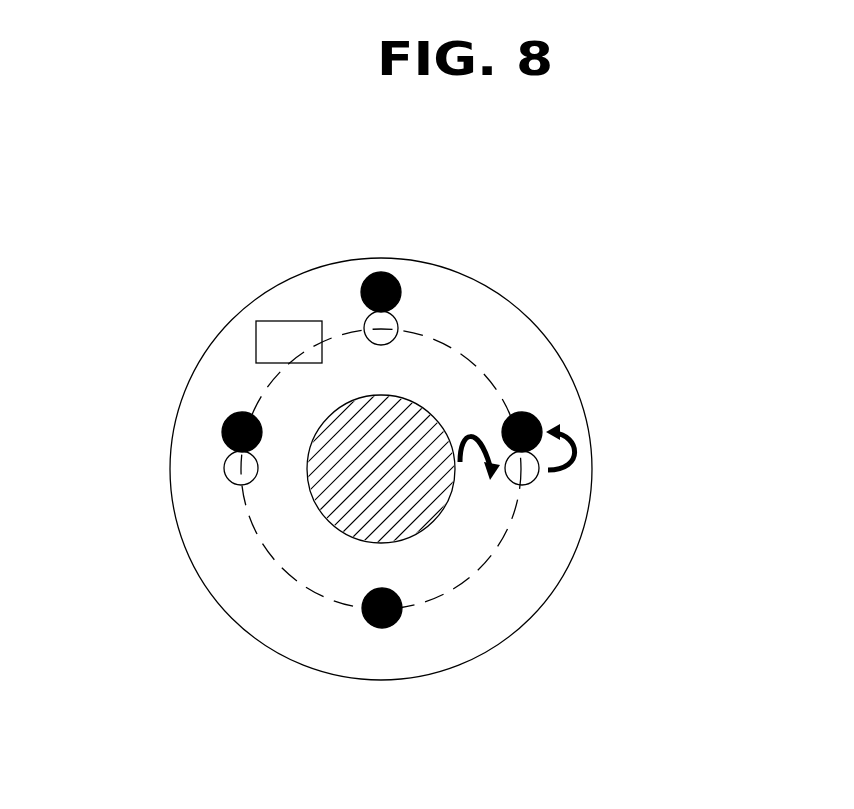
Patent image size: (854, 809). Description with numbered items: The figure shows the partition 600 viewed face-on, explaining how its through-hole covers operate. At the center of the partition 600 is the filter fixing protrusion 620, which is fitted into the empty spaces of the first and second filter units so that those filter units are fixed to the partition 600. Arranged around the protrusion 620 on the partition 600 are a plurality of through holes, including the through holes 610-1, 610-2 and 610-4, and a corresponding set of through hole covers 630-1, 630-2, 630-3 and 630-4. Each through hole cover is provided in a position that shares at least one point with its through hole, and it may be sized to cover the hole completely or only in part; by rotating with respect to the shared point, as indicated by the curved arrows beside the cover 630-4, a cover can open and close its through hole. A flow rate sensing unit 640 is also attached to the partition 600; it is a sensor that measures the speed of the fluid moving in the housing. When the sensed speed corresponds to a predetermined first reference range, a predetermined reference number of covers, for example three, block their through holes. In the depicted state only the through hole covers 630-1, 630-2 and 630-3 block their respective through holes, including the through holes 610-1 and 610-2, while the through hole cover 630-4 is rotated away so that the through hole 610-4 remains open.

The partition 600 is at (548, 395).
The through hole 610-1 is at (387, 330).
The through hole 610-2 is at (241, 468).
The through hole 610-4 is at (528, 465).
The filter fixing protrusion 620 is at (367, 437).
The through hole cover 630-1 is at (387, 272).
The through hole cover 630-2 is at (233, 467).
The through hole cover 630-3 is at (403, 618).
The through hole cover 630-4 is at (530, 425).
The flow rate sensing unit 640 is at (286, 332).